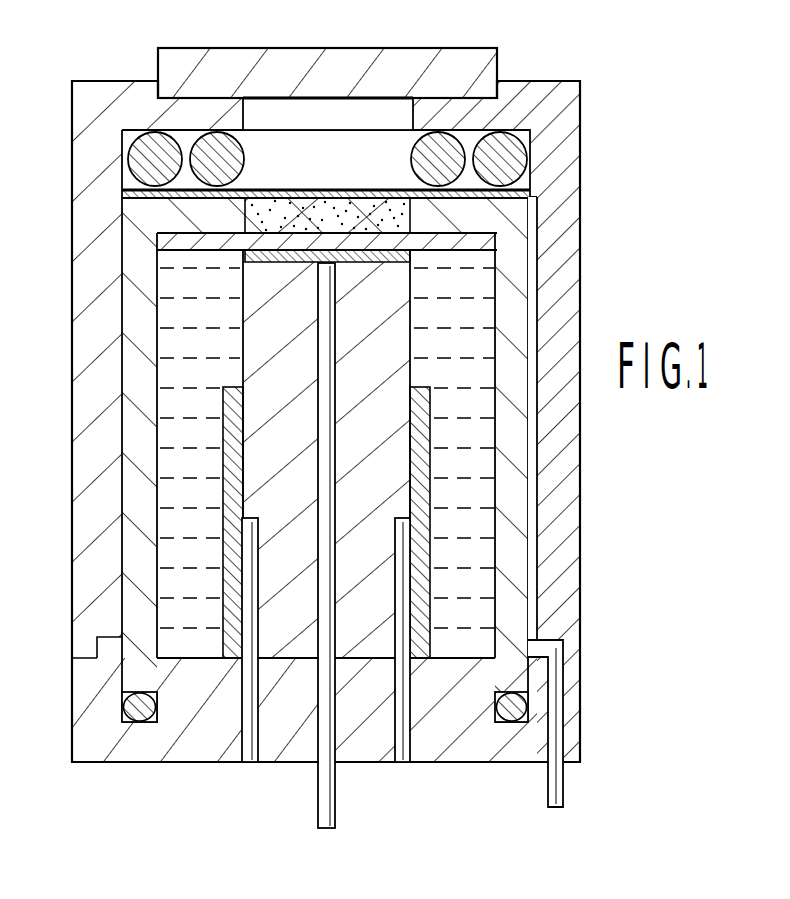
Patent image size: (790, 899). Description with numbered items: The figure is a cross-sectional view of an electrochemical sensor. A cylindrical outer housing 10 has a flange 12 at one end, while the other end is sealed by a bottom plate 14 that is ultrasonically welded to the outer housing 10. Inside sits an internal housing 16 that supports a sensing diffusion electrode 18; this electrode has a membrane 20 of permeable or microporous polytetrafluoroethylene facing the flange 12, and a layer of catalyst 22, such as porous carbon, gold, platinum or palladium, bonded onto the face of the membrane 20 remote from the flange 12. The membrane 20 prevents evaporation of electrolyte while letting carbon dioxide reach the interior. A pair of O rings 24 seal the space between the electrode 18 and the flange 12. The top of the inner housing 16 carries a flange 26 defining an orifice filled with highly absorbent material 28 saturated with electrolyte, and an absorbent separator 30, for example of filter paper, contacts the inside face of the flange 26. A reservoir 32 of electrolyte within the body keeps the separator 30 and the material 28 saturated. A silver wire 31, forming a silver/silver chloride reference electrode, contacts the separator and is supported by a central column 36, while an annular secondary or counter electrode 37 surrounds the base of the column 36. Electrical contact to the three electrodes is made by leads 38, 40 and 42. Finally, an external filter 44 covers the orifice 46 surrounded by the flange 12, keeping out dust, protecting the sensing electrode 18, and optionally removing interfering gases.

The outer housing 10 is at (570, 160).
The flange 12 is at (167, 115).
The bottom plate 14 is at (453, 727).
The internal housing 16 is at (520, 440).
The sensing diffusion electrode 18 is at (125, 192).
The membrane 20 is at (290, 188).
The layer of catalyst 22 is at (375, 188).
The O rings 24 is at (512, 148).
The flange 26 is at (180, 218).
The highly absorbent material 28 is at (265, 217).
The absorbent separator 30 is at (347, 245).
The silver wire 31 is at (410, 258).
The reservoir 32 is at (182, 432).
The central column 36 is at (390, 352).
The annular secondary electrode 37 is at (428, 540).
The lead 38 is at (535, 582).
The lead 40 is at (325, 343).
The lead 42 is at (252, 765).
The external filter 44 is at (486, 60).
The orifice 46 is at (350, 110).